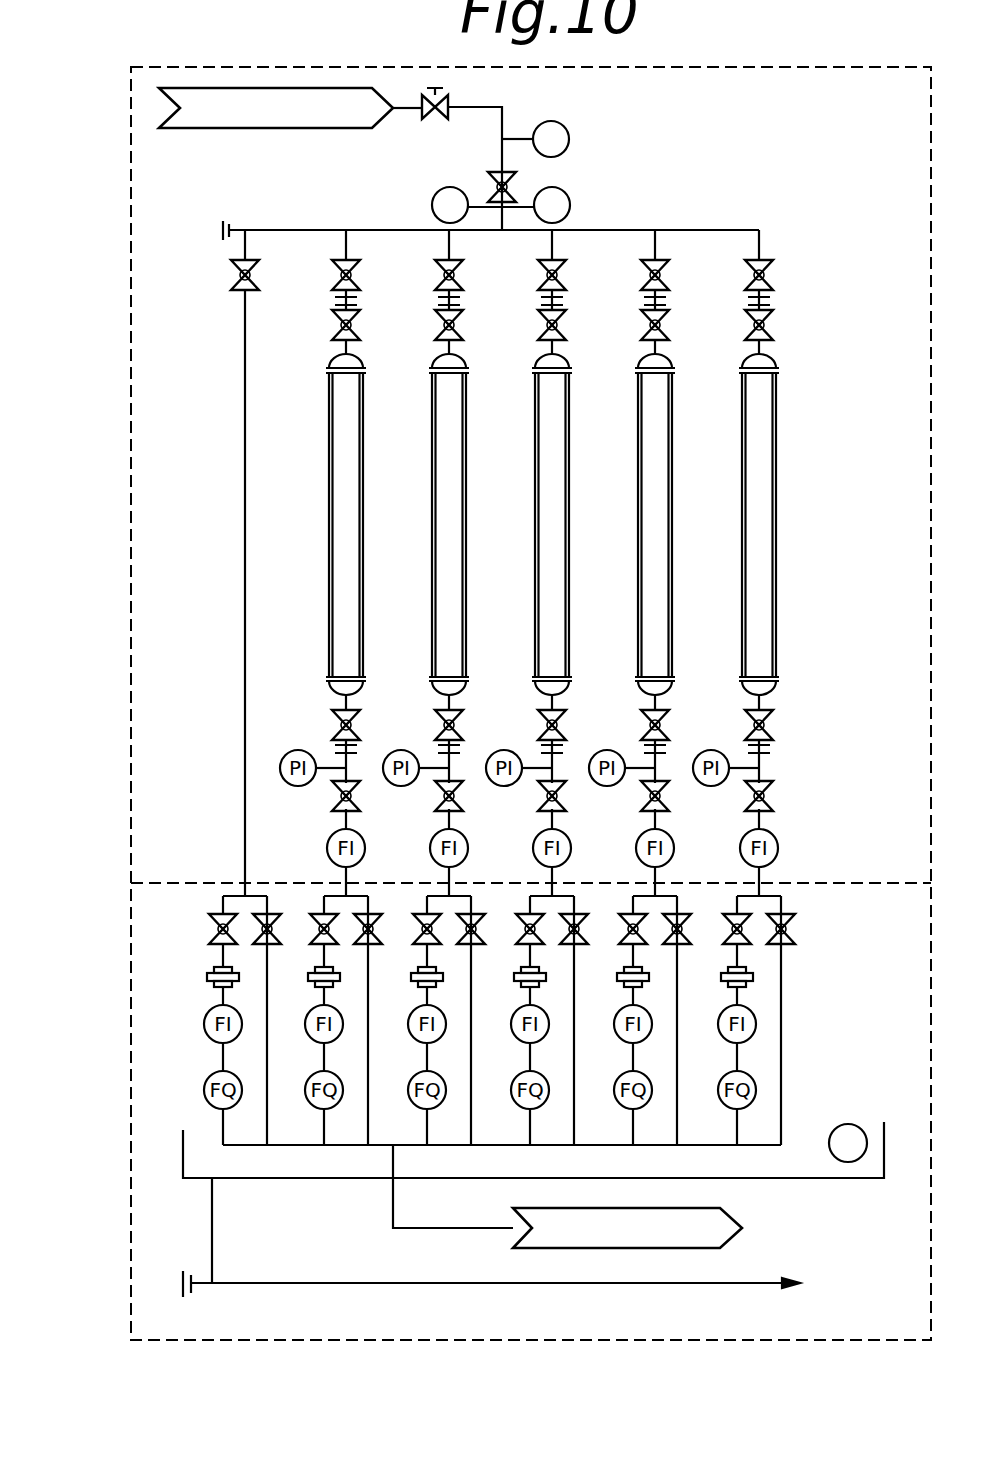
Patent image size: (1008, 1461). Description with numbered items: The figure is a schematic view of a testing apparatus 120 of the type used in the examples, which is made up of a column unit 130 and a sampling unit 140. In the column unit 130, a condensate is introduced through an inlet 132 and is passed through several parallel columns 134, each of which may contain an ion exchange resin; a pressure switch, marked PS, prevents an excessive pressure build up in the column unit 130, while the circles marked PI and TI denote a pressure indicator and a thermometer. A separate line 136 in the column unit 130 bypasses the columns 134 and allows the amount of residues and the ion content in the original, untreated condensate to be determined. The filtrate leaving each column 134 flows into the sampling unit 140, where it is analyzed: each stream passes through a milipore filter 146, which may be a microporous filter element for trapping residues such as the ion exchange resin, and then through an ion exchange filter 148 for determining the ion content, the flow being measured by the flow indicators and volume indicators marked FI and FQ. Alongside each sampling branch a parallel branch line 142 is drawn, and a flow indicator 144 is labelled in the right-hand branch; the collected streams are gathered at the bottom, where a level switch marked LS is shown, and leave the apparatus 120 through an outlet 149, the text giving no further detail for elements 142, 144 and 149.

The column unit 130 is at (126, 471).
The inlet 132 is at (243, 128).
The columns 134 is at (673, 497).
The line 136 is at (245, 628).
The sampling unit 140 is at (128, 1034).
The bypass branch line 142 is at (783, 965).
The flow indicator 144 is at (742, 993).
The milipore filter 146 is at (222, 966).
The ion exchange filter 148 is at (222, 990).
The outlet line 149 is at (738, 1222).
The testing apparatus 120 is at (121, 1210).